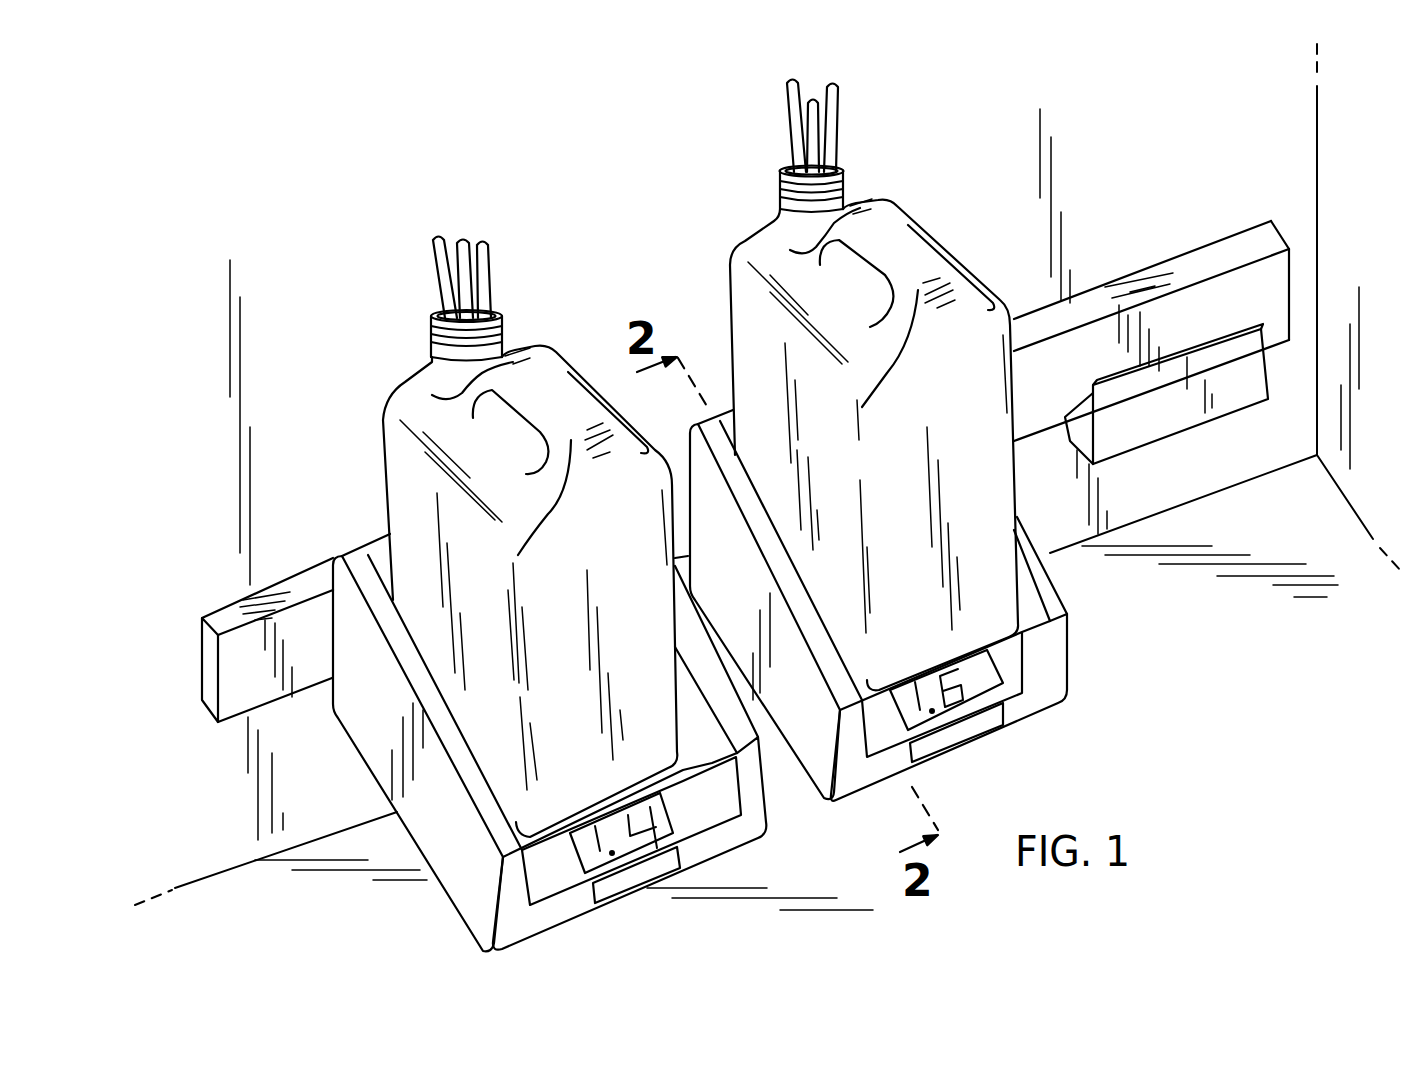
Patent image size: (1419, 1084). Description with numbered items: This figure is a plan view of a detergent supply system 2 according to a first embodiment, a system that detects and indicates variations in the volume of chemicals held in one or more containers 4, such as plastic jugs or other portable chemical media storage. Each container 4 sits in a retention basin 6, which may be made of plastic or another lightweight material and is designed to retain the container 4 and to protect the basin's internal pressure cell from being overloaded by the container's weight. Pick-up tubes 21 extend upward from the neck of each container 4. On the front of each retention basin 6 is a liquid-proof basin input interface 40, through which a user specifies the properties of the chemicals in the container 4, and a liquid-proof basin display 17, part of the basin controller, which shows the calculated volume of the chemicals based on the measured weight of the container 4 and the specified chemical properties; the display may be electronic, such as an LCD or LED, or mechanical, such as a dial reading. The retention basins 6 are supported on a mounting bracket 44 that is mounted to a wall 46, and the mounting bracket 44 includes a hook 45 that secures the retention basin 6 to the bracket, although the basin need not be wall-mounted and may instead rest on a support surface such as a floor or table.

The detergent supply system 2 is at (337, 168).
The container 4 is at (405, 493).
The retention basin 6 is at (420, 840).
The basin display 17 is at (588, 850).
The pick-up tubes 21 is at (497, 273).
The basin input interface 40 is at (630, 883).
The mounting bracket 44 is at (232, 690).
The hook 45 is at (1175, 410).
The wall 46 is at (302, 803).